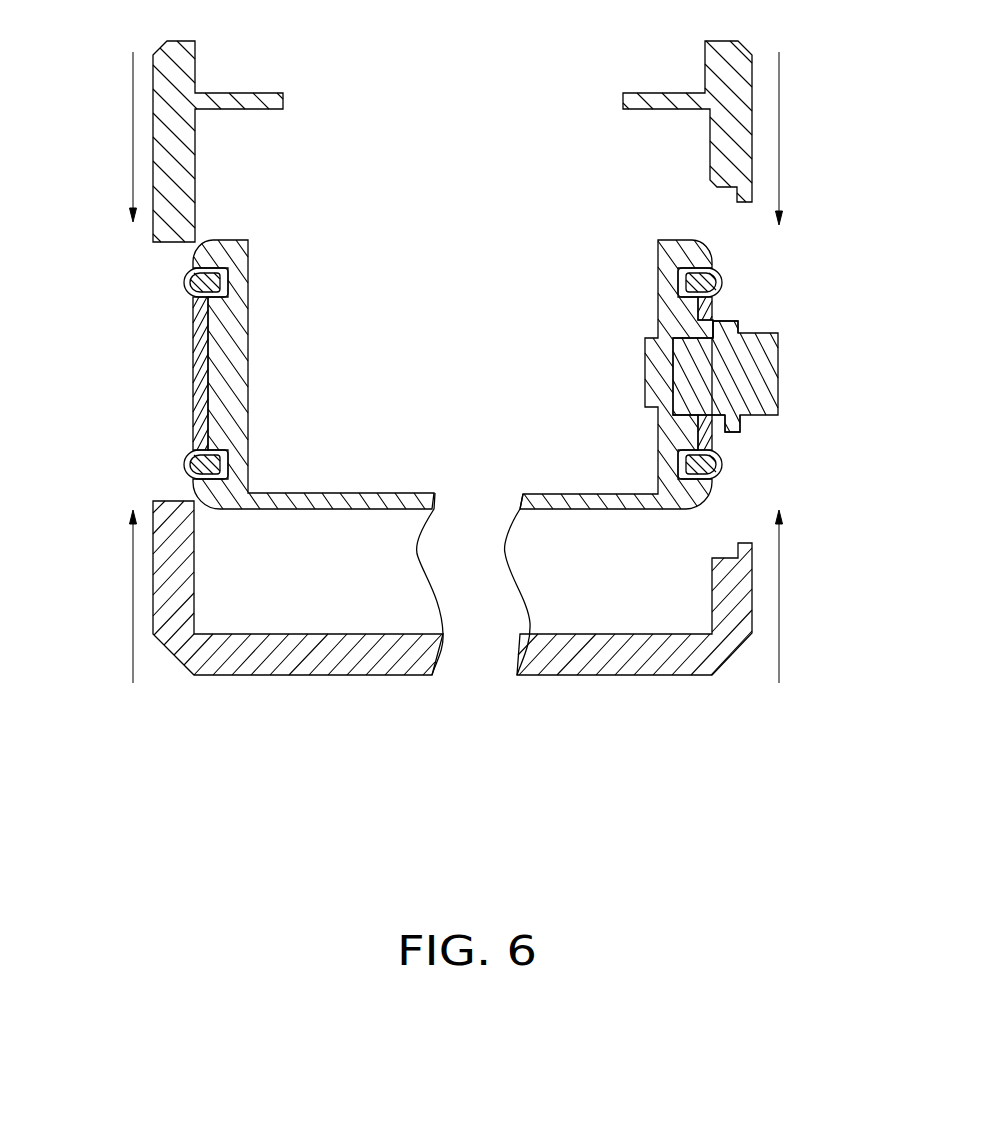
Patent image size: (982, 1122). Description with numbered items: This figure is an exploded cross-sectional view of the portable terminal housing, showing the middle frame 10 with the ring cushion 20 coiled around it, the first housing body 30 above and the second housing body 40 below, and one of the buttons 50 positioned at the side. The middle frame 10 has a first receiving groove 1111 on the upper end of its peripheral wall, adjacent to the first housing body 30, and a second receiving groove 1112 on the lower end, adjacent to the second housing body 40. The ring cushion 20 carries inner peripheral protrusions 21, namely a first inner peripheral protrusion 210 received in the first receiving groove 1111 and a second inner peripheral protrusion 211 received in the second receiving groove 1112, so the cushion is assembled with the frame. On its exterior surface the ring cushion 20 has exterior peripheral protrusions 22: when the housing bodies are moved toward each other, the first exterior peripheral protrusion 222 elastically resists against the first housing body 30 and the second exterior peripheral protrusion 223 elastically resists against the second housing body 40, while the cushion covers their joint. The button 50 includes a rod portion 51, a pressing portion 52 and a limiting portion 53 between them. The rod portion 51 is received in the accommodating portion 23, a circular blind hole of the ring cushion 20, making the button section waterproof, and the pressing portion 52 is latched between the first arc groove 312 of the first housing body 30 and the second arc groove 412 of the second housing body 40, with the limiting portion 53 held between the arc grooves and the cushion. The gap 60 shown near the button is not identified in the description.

The middle frame 10 is at (503, 374).
The first receiving groove 1111 is at (680, 278).
The second receiving groove 1112 is at (712, 492).
The ring cushion 20 is at (199, 373).
The exterior peripheral protrusion 22 is at (141, 373).
The first exterior peripheral protrusion 222 is at (203, 284).
The second exterior peripheral protrusion 223 is at (167, 456).
The inner peripheral protrusion 21 is at (653, 373).
The first inner peripheral protrusion 210 is at (690, 294).
The second inner peripheral protrusion 211 is at (693, 459).
The accommodating portion 23 is at (728, 422).
The first housing body 30 is at (452, 141).
The first arc groove 312 is at (730, 193).
The second housing body 40 is at (452, 588).
The second arc groove 412 is at (737, 552).
The button 50 is at (783, 383).
The rod portion 51 is at (688, 380).
The pressing portion 52 is at (735, 408).
The limiting portion 53 is at (738, 328).
The gap 60 is at (788, 435).